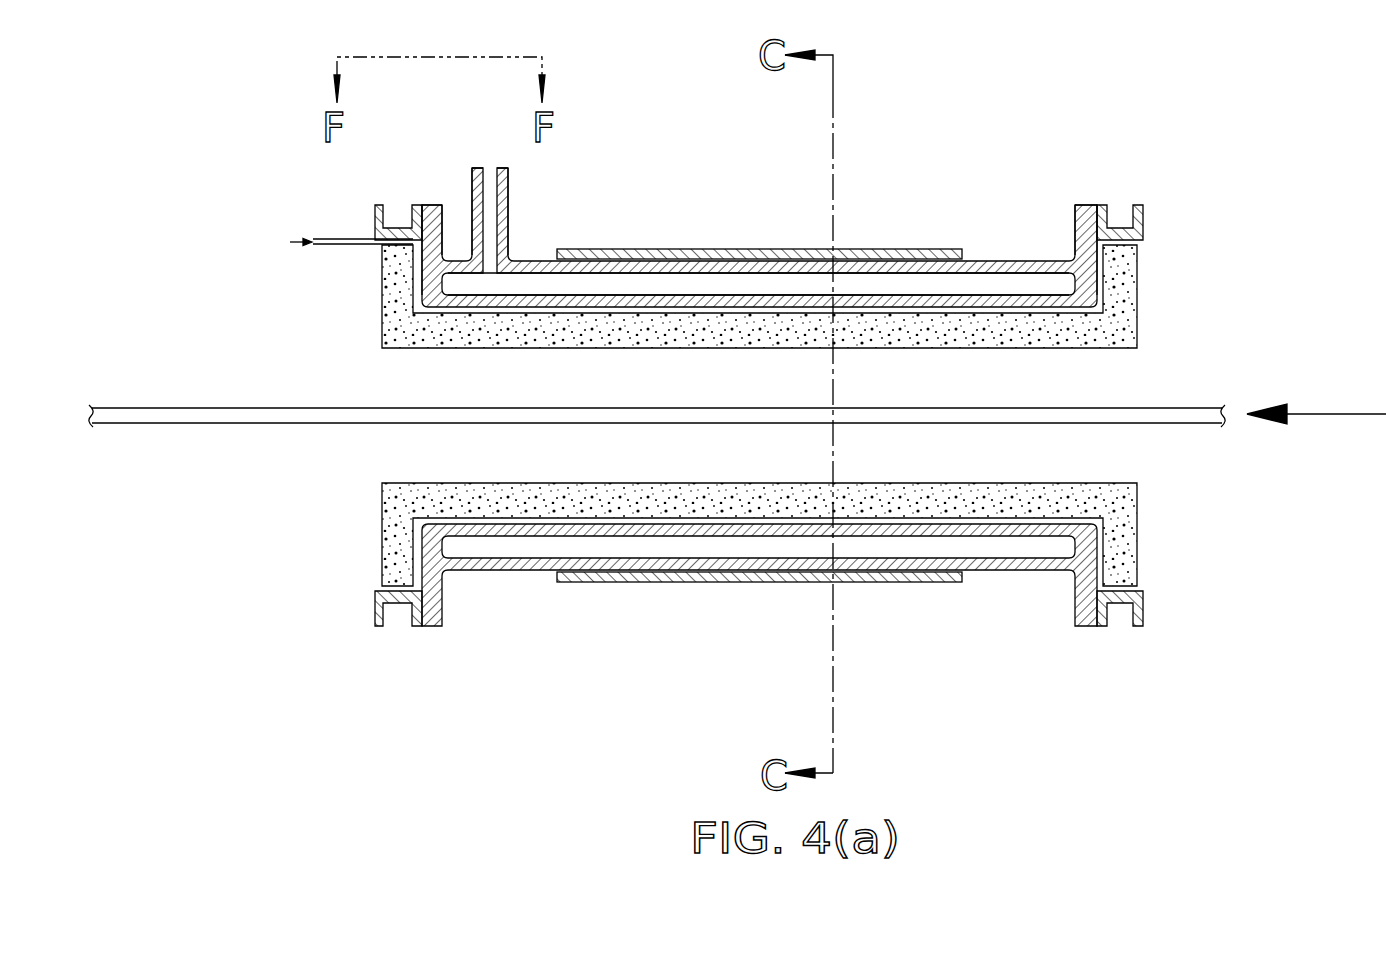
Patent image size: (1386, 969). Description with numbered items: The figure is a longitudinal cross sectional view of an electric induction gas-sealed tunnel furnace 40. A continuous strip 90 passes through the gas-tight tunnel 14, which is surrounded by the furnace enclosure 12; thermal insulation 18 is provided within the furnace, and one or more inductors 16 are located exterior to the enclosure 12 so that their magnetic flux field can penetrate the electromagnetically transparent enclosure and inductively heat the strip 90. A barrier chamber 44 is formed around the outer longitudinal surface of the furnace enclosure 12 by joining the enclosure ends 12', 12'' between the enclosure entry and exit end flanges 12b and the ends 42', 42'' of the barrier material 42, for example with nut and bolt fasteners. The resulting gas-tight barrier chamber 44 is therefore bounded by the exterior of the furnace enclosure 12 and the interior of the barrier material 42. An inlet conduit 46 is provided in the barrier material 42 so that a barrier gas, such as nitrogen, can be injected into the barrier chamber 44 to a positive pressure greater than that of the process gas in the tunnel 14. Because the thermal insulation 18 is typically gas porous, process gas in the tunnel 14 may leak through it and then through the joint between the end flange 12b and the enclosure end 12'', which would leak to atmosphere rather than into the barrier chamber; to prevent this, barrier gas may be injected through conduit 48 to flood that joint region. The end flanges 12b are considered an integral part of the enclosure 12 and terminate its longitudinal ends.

The electric induction gas-sealed tunnel furnace 40 is at (1007, 107).
The furnace enclosure 12 is at (731, 263).
The end of furnace enclosure 12' is at (1099, 169).
The end of furnace enclosure 12'' is at (399, 182).
The end flange 12b is at (375, 228).
The gas-tight tunnel 14 is at (614, 393).
The inductor 16 is at (633, 255).
The thermal insulation 18 is at (407, 336).
The barrier material 42 is at (774, 220).
The end of barrier material 42' is at (1054, 223).
The end of barrier material 42'' is at (456, 214).
The barrier chamber 44 is at (1065, 286).
The inlet conduit 46 is at (503, 213).
The conduit 48 is at (337, 243).
The strip 90 is at (178, 408).